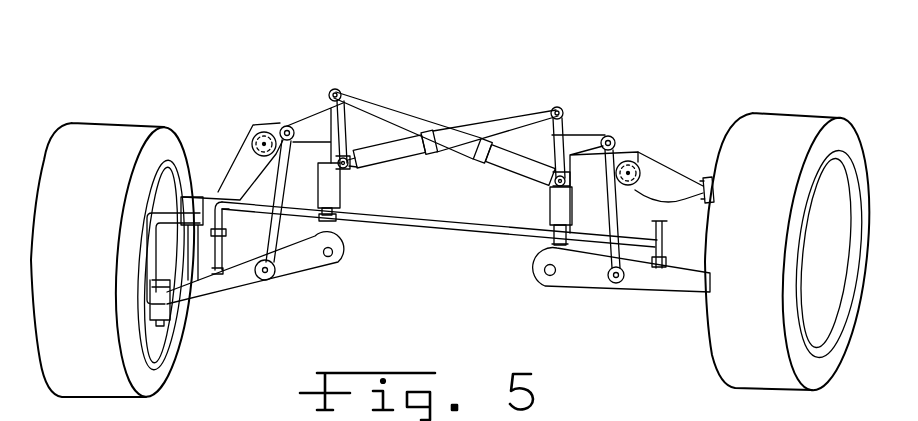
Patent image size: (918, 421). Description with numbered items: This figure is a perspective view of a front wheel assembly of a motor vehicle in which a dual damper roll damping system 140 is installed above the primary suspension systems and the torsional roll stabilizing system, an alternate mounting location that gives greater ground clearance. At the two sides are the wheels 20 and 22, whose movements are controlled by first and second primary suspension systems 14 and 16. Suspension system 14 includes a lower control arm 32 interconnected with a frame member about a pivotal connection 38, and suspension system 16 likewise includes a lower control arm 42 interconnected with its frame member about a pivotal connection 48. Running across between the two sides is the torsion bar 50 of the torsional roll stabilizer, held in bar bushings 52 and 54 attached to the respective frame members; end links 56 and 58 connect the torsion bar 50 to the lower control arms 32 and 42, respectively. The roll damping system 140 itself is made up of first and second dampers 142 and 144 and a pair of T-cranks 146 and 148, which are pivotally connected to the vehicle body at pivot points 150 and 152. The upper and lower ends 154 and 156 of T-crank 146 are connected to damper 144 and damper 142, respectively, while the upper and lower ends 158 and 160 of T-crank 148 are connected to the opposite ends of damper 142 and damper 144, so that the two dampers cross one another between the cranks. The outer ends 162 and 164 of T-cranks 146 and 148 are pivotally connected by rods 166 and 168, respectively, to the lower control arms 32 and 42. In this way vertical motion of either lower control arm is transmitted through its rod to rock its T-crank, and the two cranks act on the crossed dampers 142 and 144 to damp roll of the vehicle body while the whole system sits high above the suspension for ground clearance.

The first primary suspension system 14 is at (220, 174).
The second primary suspension system 16 is at (633, 125).
The wheel 20 is at (165, 383).
The wheel 22 is at (750, 378).
The lower control arm 32 is at (664, 282).
The pivotal connection 38 is at (334, 258).
The lower control arm 42 is at (202, 290).
The pivotal connection 48 is at (546, 278).
The torsion bar 50 is at (455, 232).
The bar bushing 52 is at (340, 220).
The bar bushing 54 is at (557, 242).
The end link 56 is at (233, 250).
The end link 58 is at (652, 260).
The dual damper roll damping system 140 is at (446, 107).
The first damper 142 is at (393, 141).
The second damper 144 is at (512, 160).
The T-crank 146 is at (280, 118).
The T-crank 148 is at (578, 122).
The pivot point 150 is at (336, 130).
The pivot point 152 is at (566, 146).
The upper end 154 is at (337, 89).
The lower end 156 is at (348, 170).
The upper end 158 is at (556, 106).
The lower end 160 is at (553, 186).
The outer end 162 is at (283, 122).
The outer end 164 is at (616, 140).
The rod 166 is at (278, 226).
The rod 168 is at (601, 253).